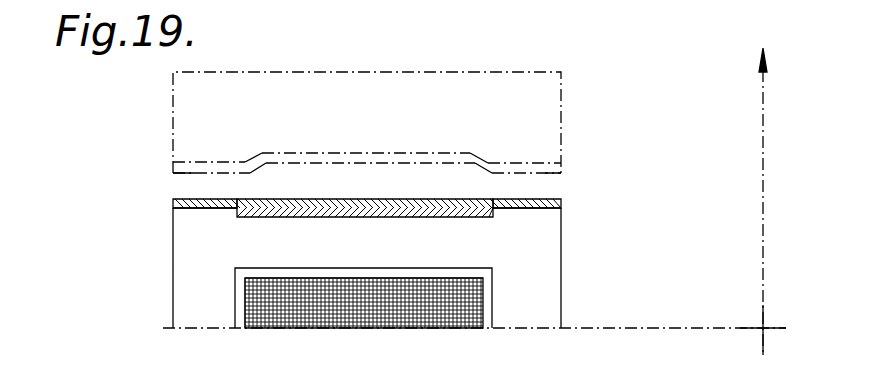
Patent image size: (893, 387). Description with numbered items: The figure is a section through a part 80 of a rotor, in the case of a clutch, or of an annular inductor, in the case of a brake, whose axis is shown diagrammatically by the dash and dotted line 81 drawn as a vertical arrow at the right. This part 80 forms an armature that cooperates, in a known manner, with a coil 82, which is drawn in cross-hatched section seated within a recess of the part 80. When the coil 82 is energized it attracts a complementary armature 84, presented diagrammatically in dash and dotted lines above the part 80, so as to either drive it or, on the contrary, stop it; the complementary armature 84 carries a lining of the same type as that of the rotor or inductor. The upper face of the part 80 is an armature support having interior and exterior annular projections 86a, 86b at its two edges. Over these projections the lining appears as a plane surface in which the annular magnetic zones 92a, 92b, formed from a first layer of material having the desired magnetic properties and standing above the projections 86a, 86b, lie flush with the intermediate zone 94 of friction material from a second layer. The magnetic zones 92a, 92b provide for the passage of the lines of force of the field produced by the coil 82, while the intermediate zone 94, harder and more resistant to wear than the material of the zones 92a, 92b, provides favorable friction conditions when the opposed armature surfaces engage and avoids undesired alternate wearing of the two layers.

The complementary armature 84 is at (310, 95).
The annular magnetic zone 92a is at (200, 199).
The annular magnetic zone 92b is at (540, 200).
The intermediate zone of friction material 94 is at (372, 207).
The interior annular projection 86a is at (196, 209).
The exterior annular projection 86b is at (556, 212).
The part of rotor or annular inductor 80 is at (538, 268).
The coil 82 is at (413, 318).
The axis 81 is at (761, 202).